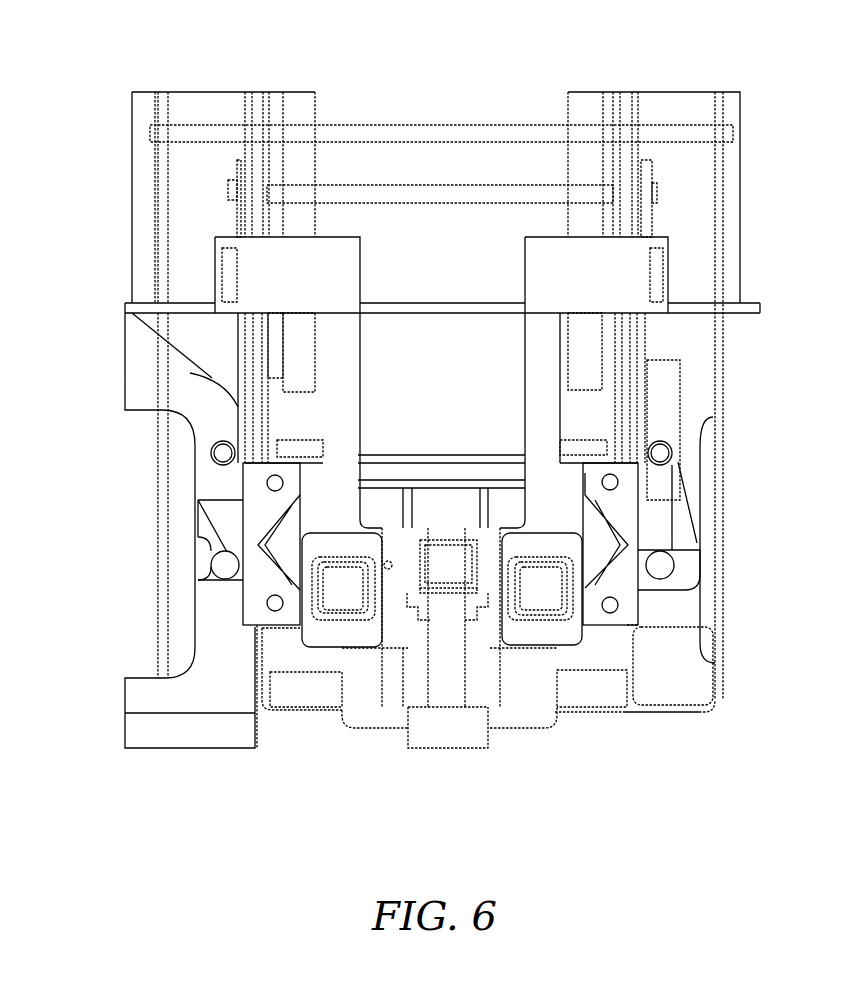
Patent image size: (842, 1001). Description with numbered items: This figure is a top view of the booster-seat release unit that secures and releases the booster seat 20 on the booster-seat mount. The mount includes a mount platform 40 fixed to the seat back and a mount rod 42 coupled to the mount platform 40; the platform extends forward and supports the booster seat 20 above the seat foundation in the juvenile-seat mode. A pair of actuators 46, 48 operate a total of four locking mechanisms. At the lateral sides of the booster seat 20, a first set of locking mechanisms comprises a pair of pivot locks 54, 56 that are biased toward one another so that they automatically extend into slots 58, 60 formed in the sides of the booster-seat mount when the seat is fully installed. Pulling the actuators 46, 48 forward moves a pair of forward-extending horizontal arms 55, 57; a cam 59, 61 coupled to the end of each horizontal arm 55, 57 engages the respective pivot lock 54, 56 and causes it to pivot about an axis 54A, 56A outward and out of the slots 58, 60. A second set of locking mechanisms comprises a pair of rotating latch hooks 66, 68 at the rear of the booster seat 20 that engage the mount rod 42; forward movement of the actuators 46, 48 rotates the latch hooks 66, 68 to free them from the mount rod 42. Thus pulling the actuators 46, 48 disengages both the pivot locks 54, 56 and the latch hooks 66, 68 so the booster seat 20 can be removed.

The booster seat 20 is at (752, 234).
The mount platform 40 is at (590, 110).
The mount rod 42 is at (435, 180).
The actuator 46 is at (337, 652).
The actuator 48 is at (556, 645).
The pivot lock 54 is at (192, 550).
The axis 54A is at (211, 453).
The horizontal arm 55 is at (238, 382).
The pivot lock 56 is at (710, 542).
The axis 56A is at (672, 453).
The horizontal arm 57 is at (643, 378).
The slot 58 is at (228, 583).
The cam 59 is at (223, 513).
The slot 60 is at (655, 602).
The cam 61 is at (667, 513).
The latch hook 66 is at (240, 215).
The latch hook 68 is at (647, 215).